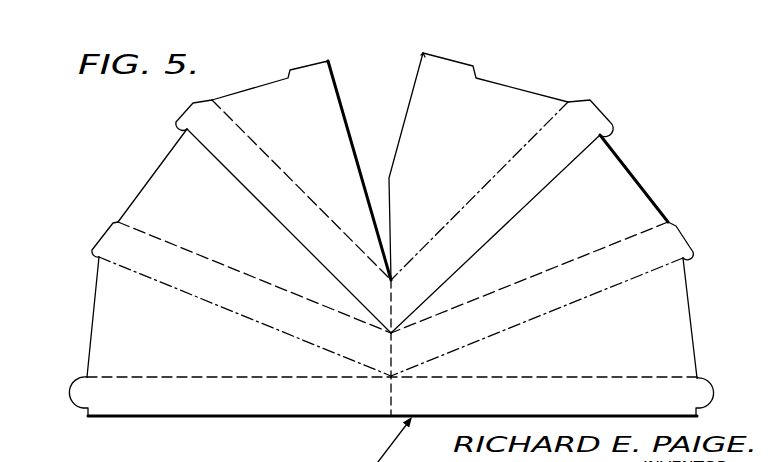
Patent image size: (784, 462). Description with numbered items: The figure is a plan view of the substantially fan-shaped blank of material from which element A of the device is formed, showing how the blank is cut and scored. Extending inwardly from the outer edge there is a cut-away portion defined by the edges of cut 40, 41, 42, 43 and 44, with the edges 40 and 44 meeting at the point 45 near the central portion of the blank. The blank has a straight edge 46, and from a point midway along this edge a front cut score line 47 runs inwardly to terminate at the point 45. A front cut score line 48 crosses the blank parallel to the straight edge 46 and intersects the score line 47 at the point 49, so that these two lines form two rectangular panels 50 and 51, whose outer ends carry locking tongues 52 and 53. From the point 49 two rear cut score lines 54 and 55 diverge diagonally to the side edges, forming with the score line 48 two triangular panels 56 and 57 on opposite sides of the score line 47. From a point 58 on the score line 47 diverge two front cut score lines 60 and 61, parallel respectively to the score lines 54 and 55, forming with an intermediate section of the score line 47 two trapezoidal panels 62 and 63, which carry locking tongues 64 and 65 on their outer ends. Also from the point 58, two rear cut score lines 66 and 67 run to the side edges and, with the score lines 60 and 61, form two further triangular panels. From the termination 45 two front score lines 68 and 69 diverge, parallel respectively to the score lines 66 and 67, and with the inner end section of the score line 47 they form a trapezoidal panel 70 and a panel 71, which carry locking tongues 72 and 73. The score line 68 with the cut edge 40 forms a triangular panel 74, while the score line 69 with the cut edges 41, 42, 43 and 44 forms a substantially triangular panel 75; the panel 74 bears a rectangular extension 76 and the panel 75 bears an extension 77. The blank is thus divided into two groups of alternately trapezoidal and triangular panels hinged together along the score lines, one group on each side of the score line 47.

The edge of cut 40 is at (345, 129).
The edge of cut 41 is at (413, 95).
The edge of cut 42 is at (380, 226).
The edge of cut 43 is at (396, 263).
The edge of cut 44 is at (404, 266).
The point 45 is at (388, 281).
The straight edge 46 is at (300, 417).
The front cut score line 47 is at (392, 299).
The front cut score line 48 is at (190, 376).
The intersection point 49 is at (388, 378).
The rectangular panel 50 is at (164, 402).
The rectangular panel 51 is at (512, 392).
The locking tongue 52 is at (67, 396).
The locking tongue 53 is at (714, 391).
The rear cut score line 54 is at (173, 284).
The rear cut score line 55 is at (584, 300).
The triangular panel 56 is at (108, 310).
The triangular panel 57 is at (672, 305).
The point 58 is at (389, 335).
The front cut score line 60 is at (197, 255).
The front cut score line 61 is at (566, 262).
The trapezoidal panel 62 is at (246, 286).
The trapezoidal panel 63 is at (490, 300).
The locking tongue 64 is at (85, 253).
The locking tongue 65 is at (696, 254).
The rear cut score line 66 is at (233, 173).
The rear cut score line 67 is at (547, 182).
The front score line 68 is at (257, 143).
The front score line 69 is at (500, 173).
The trapezoidal panel 70 is at (290, 203).
The panel 71 is at (497, 193).
The locking tongue 72 is at (187, 113).
The locking tongue 73 is at (612, 122).
The triangular panel 74 is at (267, 95).
The panel 75 is at (502, 95).
The rectangular extension 76 is at (312, 62).
The extension 77 is at (442, 62).